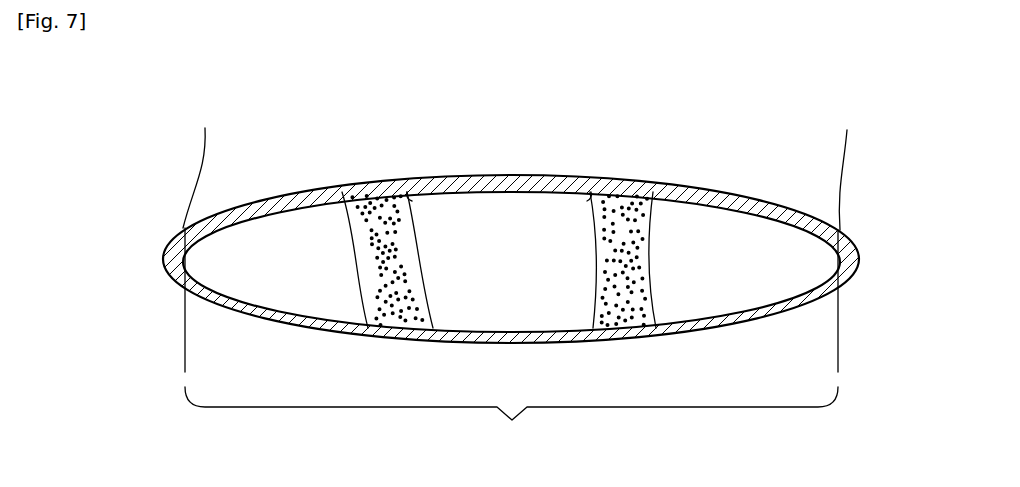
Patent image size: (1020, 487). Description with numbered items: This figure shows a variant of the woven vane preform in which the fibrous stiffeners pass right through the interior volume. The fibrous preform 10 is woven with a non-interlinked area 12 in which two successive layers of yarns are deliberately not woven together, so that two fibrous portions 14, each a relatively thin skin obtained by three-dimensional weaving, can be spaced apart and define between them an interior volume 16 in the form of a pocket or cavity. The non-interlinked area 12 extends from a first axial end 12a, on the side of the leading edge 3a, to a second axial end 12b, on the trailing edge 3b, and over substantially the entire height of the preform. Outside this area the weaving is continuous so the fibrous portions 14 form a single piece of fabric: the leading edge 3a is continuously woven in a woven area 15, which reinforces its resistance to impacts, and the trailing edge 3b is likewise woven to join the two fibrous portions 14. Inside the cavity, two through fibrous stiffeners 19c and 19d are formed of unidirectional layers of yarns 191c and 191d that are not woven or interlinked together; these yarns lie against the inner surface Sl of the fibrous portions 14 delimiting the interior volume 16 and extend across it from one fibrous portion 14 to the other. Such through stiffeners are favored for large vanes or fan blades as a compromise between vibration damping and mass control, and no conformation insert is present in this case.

The fibrous preform 10 is at (510, 268).
The non-interlinked area 12 is at (526, 277).
The first axial end 12a is at (206, 162).
The second axial end 12b is at (851, 163).
The fibrous portion 14 is at (712, 186).
The woven area 15 is at (182, 283).
The interior volume 16 is at (517, 268).
The fibrous stiffener 19c is at (343, 240).
The fibrous stiffener 19d is at (588, 241).
The unidirectional layers of yarns 191c is at (410, 180).
The unidirectional layers of yarns 191d is at (579, 180).
The leading edge 3a is at (165, 258).
The trailing edge 3b is at (860, 258).
The inner surface Sl is at (264, 292).